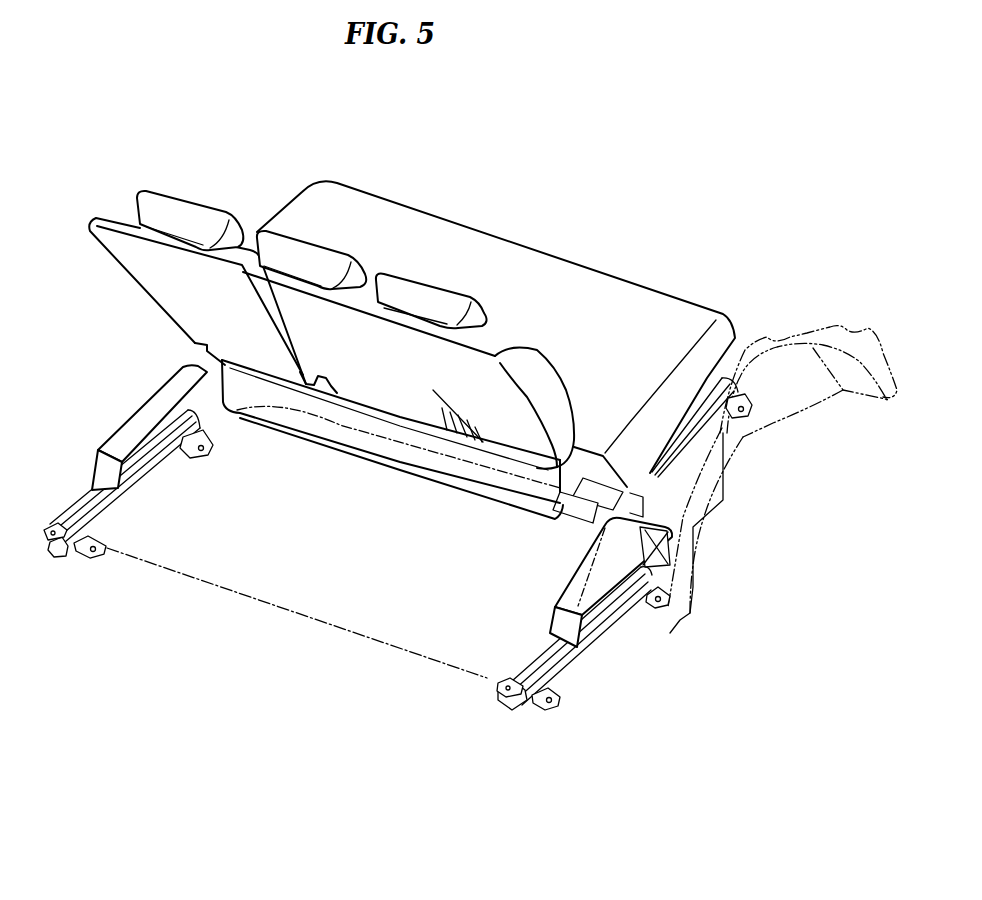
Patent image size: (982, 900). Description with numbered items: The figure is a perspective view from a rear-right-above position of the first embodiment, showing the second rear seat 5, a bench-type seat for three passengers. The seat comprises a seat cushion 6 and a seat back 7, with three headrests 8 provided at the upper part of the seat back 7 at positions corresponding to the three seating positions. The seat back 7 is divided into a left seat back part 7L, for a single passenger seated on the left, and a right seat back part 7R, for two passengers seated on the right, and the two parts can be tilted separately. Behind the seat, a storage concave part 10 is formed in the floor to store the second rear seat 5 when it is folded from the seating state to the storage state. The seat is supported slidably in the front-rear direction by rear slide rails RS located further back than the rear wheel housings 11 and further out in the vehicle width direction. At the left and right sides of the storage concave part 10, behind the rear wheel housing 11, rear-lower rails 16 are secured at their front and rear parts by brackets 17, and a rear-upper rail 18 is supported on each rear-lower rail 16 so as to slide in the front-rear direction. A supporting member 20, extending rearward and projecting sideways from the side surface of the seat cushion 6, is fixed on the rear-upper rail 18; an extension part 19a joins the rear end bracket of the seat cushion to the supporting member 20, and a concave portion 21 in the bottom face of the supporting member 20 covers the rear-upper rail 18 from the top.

The second rear seat 5 is at (653, 228).
The seat cushion 6 is at (705, 305).
The seat back 7 is at (117, 198).
The left seat back part 7L is at (95, 243).
The right seat back part 7R is at (530, 357).
The headrest 8 is at (173, 198).
The storage concave part 10 is at (306, 614).
The rear wheel housing 11 is at (788, 335).
The rear-lower rail 16 is at (113, 513).
The bracket 17 is at (207, 453).
The rear-upper rail 18 is at (610, 633).
The extension part 19a is at (243, 407).
The supporting member 20 is at (130, 422).
The concave portion 21 is at (590, 643).
The rear slide rail RS is at (140, 390).